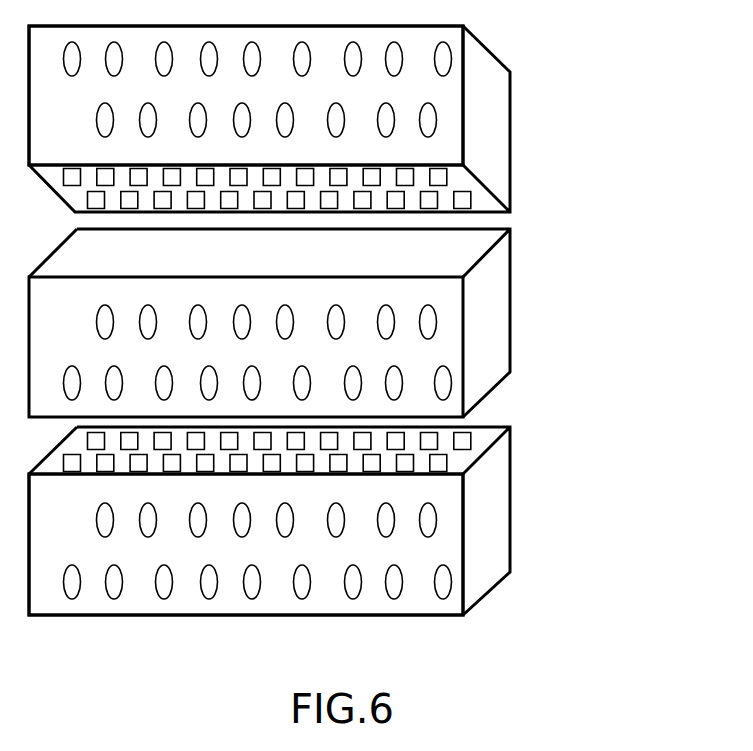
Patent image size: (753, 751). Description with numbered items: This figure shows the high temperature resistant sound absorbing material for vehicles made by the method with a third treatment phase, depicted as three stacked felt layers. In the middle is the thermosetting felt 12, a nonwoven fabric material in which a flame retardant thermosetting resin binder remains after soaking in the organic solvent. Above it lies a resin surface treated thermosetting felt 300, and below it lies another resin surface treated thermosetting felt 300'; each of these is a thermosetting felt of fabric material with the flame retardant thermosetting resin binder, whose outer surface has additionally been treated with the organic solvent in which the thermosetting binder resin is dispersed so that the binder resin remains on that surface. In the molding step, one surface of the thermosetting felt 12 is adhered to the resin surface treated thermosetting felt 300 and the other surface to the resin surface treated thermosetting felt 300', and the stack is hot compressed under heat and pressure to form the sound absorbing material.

The thermosetting felt 12 is at (586, 327).
The resin surface treated thermosetting felt 300 is at (366, 114).
The resin surface treated thermosetting felt 300' is at (369, 525).